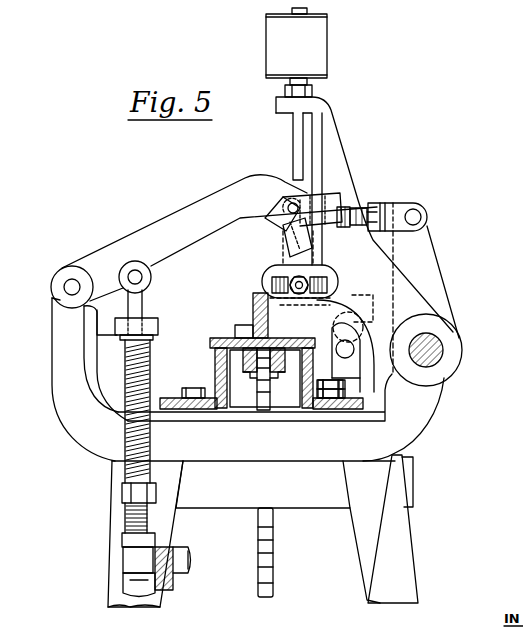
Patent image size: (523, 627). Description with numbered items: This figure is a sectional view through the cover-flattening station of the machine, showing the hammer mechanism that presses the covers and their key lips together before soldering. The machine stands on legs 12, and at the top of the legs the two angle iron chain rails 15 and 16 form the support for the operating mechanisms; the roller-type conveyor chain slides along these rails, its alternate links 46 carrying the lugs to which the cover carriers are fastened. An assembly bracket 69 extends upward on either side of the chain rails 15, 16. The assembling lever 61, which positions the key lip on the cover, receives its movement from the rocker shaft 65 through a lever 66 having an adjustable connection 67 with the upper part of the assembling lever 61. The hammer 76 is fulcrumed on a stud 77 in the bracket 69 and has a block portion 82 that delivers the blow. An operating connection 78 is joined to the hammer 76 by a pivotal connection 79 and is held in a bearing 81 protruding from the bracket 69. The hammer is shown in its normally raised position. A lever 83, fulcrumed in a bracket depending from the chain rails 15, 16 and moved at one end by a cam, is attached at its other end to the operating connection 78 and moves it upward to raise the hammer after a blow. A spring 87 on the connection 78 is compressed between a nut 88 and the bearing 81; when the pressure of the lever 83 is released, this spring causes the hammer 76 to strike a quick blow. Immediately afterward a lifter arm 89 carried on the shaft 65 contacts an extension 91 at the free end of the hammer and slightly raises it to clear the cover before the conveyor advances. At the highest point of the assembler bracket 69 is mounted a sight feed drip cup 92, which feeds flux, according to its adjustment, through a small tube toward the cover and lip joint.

The legs 12 is at (400, 531).
The angle iron chain rail 15 is at (310, 409).
The angle iron chain rail 16 is at (215, 372).
The alternate links 46 is at (317, 312).
The assembling lever 61 is at (285, 257).
The rocker shaft 65 is at (444, 350).
The lever 66 is at (432, 273).
The adjustable connection 67 is at (397, 205).
The assembly bracket 69 is at (62, 410).
The hammer 76 is at (198, 208).
The stud 77 is at (66, 285).
The operating connection 78 is at (128, 447).
The pivotal connection 79 is at (139, 277).
The bearing 81 is at (140, 327).
The block portion 82 is at (308, 240).
The lever 83 is at (178, 580).
The spring 87 is at (135, 488).
The nut 88 is at (122, 496).
The lifter arm 89 is at (350, 354).
The extension 91 is at (330, 195).
The sight feed drip cup 92 is at (317, 53).